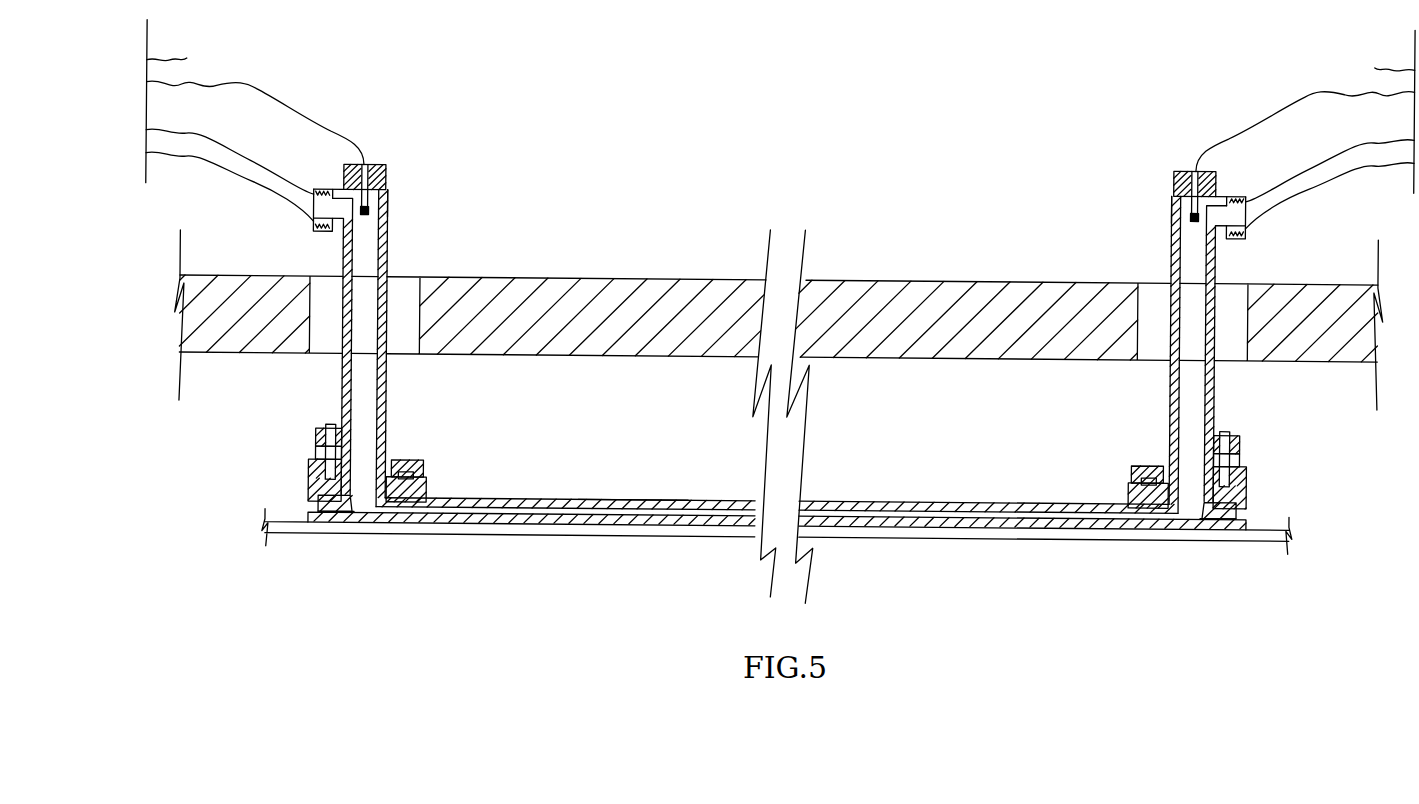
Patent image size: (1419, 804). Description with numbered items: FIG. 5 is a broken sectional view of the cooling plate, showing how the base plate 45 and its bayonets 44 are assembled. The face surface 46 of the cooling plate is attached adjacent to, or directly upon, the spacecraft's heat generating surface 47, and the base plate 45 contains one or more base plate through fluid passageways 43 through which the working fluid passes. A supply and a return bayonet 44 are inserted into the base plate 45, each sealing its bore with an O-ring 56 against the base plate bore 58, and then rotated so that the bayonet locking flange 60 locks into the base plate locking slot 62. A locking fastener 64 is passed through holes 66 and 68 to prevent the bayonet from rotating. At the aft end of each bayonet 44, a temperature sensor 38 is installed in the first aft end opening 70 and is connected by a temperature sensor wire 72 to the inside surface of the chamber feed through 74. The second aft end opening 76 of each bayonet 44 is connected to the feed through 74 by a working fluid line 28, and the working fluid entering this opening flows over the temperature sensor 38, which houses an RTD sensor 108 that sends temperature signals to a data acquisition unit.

The working fluid line 28 is at (227, 183).
The temperature sensor 38 is at (375, 165).
The base plate through fluid passageway 43 is at (695, 496).
The bayonet 44 is at (387, 248).
The base plate 45 is at (603, 497).
The face surface 46 is at (690, 526).
The heat generating surface 47 is at (440, 528).
The O-ring 56 is at (343, 482).
The base plate bore 58 is at (352, 510).
The bayonet locking flange 60 is at (322, 424).
The base plate locking slot 62 is at (415, 480).
The locking fastener 64 is at (325, 452).
The hole 66 is at (330, 420).
The hole 68 is at (310, 478).
The first aft end opening 70 is at (343, 170).
The temperature sensor wire 72 is at (253, 90).
The chamber feed through 74 is at (185, 58).
The second aft end opening 76 is at (318, 206).
The RTD sensor 108 is at (387, 212).